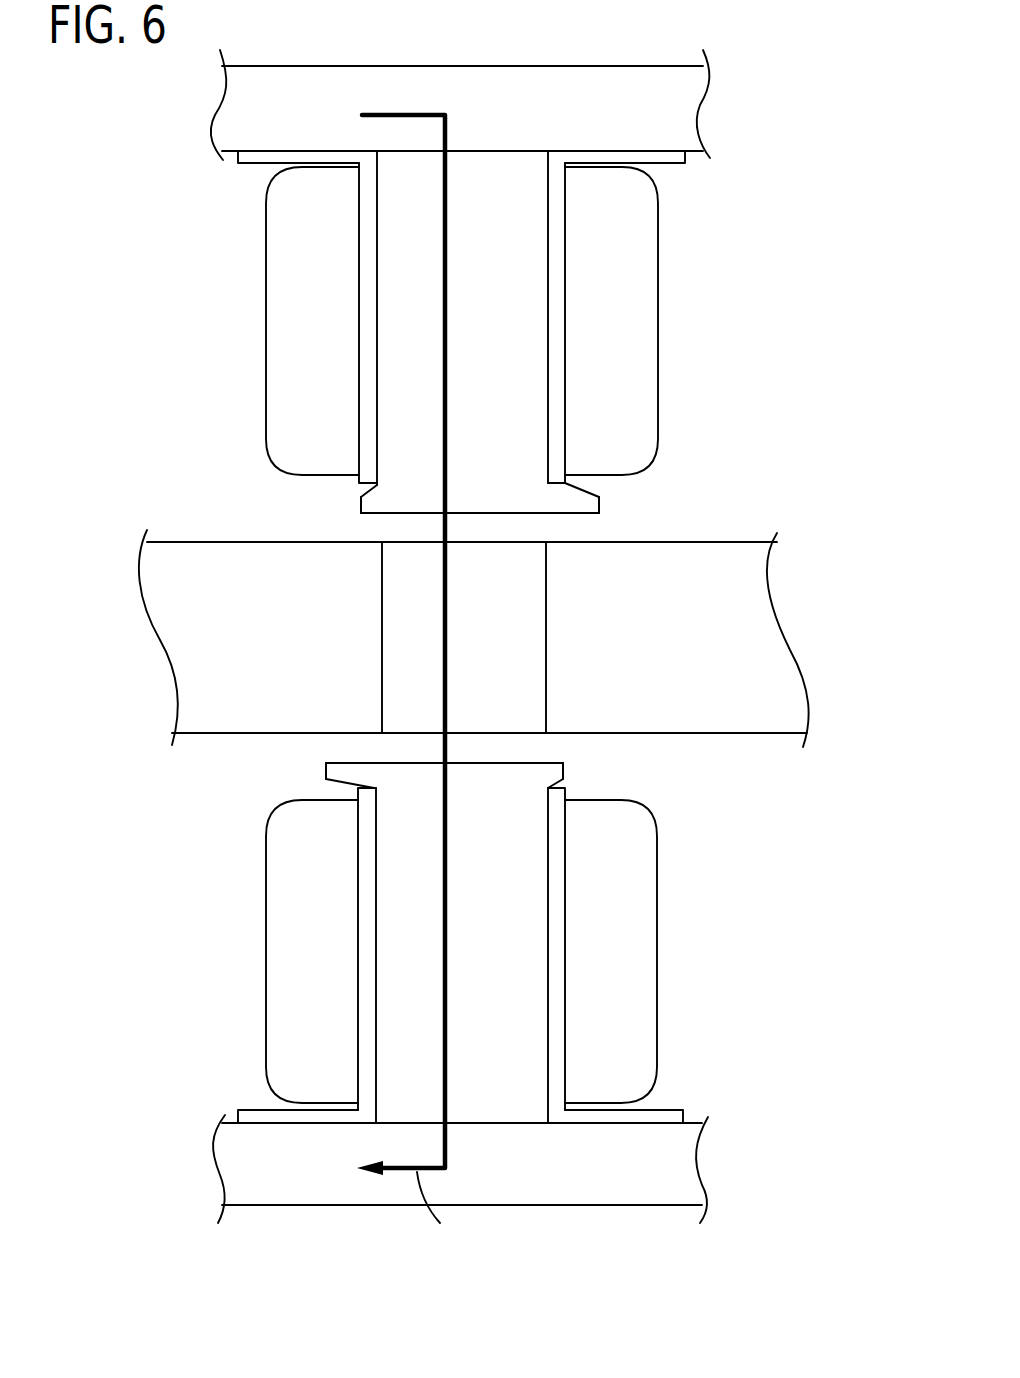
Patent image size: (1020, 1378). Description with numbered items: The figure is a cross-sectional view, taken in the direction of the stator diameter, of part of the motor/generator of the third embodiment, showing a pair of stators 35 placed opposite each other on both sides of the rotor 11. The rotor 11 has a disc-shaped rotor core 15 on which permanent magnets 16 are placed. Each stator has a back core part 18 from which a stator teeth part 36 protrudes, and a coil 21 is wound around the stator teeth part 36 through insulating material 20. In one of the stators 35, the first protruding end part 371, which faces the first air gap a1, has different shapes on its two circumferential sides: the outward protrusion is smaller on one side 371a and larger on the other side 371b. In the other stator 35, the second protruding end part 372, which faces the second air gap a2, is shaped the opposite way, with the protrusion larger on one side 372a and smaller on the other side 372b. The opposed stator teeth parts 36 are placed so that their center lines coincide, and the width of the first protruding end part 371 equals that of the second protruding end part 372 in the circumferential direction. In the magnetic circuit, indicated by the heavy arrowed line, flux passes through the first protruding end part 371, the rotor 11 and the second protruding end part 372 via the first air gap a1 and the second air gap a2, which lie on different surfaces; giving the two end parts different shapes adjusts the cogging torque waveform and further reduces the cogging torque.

The rotor 11 is at (843, 635).
The rotor core 15 is at (510, 630).
The permanent magnets 16 is at (727, 722).
The back core part 18 is at (237, 118).
The insulating material 20 is at (248, 164).
The coil 21 is at (650, 353).
The stators 35 is at (468, 636).
The stator teeth part 36 is at (500, 167).
The first protruding end part 371 is at (410, 525).
The one side of first protruding end part 371a is at (361, 501).
The other side of first protruding end part 371b is at (599, 502).
The second protruding end part 372 is at (496, 757).
The one side of second protruding end part 372a is at (327, 767).
The other side of second protruding end part 372b is at (563, 770).
The first air gap a1 is at (516, 527).
The second air gap a2 is at (402, 750).